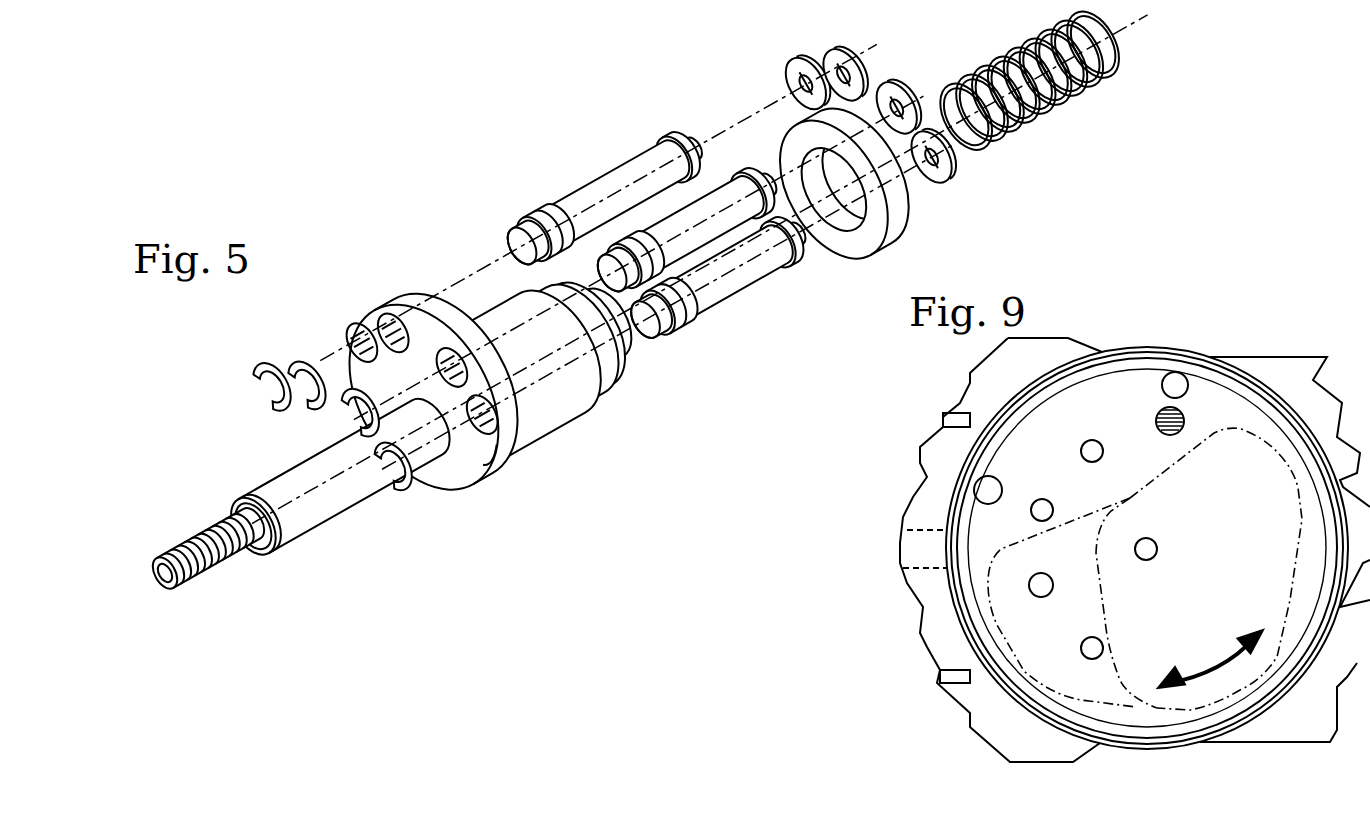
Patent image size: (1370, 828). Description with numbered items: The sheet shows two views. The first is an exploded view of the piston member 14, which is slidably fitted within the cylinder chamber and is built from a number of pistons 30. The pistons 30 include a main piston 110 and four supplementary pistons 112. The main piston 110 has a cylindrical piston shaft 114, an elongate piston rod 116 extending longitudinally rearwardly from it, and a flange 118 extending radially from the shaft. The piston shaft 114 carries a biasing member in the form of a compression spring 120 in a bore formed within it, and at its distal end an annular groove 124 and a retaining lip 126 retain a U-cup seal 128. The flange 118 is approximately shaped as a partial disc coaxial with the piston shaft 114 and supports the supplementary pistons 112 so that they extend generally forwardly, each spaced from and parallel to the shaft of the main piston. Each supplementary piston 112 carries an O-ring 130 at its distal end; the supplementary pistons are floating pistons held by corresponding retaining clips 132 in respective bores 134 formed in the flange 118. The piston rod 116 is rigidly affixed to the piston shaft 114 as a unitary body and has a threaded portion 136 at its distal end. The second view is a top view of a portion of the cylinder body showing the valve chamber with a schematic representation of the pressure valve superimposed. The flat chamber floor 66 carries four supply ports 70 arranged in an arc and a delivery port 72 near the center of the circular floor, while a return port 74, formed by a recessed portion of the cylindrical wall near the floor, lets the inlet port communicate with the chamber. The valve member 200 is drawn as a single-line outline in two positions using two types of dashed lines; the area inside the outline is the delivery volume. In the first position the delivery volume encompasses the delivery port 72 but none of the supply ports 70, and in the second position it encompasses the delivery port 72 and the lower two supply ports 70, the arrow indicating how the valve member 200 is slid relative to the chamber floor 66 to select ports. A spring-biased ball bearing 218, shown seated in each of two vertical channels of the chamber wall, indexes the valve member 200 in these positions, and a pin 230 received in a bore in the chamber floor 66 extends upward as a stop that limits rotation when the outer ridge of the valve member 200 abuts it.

In FIG. 5, the piston member 14 is at (470, 480).
In FIG. 5, the pistons 30 is at (590, 200).
In FIG. 5, the main piston 110 is at (540, 440).
In FIG. 5, the supplementary pistons 112 is at (648, 185).
In FIG. 5, the cylindrical piston shaft 114 is at (580, 415).
In FIG. 5, the elongate piston rod 116 is at (330, 510).
In FIG. 5, the flange 118 is at (412, 303).
In FIG. 5, the compression spring 120 is at (1045, 105).
In FIG. 5, the annular groove 124 is at (602, 390).
In FIG. 5, the retaining lip 126 is at (615, 373).
In FIG. 5, the U-cup seal 128 is at (880, 235).
In FIG. 5, the O-ring 130 is at (897, 78).
In FIG. 5, the retaining clips 132 is at (296, 368).
In FIG. 5, the bores 134 is at (397, 345).
In FIG. 5, the threaded portion 136 is at (205, 570).
In FIG. 9, the chamber floor 66 is at (1105, 498).
In FIG. 9, the supply ports 70 is at (1098, 443).
In FIG. 9, the delivery port 72 is at (1152, 557).
In FIG. 9, the return port 74 is at (907, 532).
In FIG. 9, the valve member 200 is at (1165, 503).
In FIG. 9, the spring-biased ball bearing 218 is at (1164, 390).
In FIG. 9, the pin 230 is at (1185, 418).